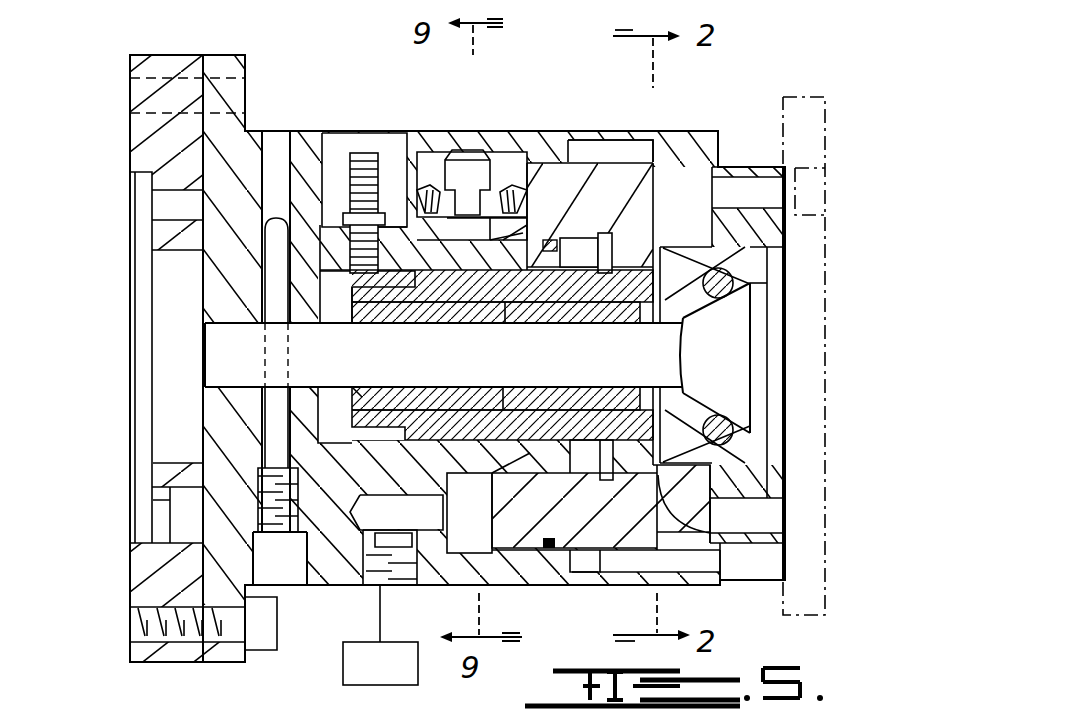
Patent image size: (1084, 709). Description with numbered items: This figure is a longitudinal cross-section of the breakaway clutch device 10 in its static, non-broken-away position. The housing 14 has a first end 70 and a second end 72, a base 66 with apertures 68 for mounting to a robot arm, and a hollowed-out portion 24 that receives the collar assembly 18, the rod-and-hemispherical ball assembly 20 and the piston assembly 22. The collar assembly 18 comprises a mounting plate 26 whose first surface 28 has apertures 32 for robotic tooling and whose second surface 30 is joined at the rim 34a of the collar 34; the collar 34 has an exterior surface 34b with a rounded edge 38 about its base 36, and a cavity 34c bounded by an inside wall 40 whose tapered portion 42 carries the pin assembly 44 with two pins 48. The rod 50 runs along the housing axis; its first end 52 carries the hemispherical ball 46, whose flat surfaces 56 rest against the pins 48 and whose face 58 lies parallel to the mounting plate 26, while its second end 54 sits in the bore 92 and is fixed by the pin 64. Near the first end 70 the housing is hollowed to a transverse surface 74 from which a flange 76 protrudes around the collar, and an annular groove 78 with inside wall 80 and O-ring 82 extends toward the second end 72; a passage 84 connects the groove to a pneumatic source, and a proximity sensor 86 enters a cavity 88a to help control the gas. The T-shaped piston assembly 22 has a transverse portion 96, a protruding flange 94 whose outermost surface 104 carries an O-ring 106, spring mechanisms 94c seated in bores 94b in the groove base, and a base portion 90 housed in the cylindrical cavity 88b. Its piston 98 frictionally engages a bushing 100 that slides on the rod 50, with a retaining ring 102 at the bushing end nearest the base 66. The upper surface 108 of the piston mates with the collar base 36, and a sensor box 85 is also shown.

The clutch device 10 is at (271, 82).
The housing 14 is at (514, 131).
The collar assembly 18 is at (756, 164).
The rod-and-hemispherical ball assembly 20 is at (745, 330).
The piston assembly 22 is at (510, 522).
The hollowed-out portion 24 is at (467, 160).
The mounting plate 26 is at (800, 243).
The first surface 28 is at (833, 100).
The second surface 30 is at (778, 580).
The apertures 32 is at (826, 410).
The collar 34 is at (780, 550).
The rim 34a is at (783, 230).
The exterior surface 34b is at (715, 167).
The cavity 34c is at (758, 258).
The base 36 is at (615, 243).
The rounded edge 38 is at (670, 188).
The inside wall 40 is at (785, 485).
The tapered portion 42 is at (755, 284).
The pin assembly 44 is at (728, 416).
The hemispherical ball 46 is at (740, 364).
The pins 48 is at (750, 331).
The rod 50 is at (382, 359).
The first end 52 is at (673, 345).
The second end 54 is at (203, 336).
The flat surfaces 56 is at (690, 258).
The face 58 is at (750, 347).
The pin 64 is at (265, 423).
The base 66 is at (147, 568).
The apertures 68 is at (130, 85).
The first end 70 is at (725, 580).
The second end 72 is at (130, 125).
The transverse surface 74 is at (597, 232).
The flange 76 is at (617, 582).
The annular groove 78 is at (462, 530).
The inside wall 80 is at (517, 231).
The O-ring 82 is at (552, 246).
The passage 84 is at (360, 556).
The controller 85 is at (343, 663).
The proximity sensor 86 is at (350, 153).
The cavity 88a is at (392, 167).
The cylindrical cavity 88b is at (396, 512).
The base portion 90 is at (448, 422).
The bore 92 is at (205, 393).
The protruding flange 94 is at (594, 170).
The bores 94b is at (450, 197).
The spring mechanism 94c is at (486, 197).
The transverse portion 96 is at (660, 200).
The piston 98 is at (567, 425).
The bushing 100 is at (420, 312).
The retaining ring 102 is at (348, 397).
The outermost surface 104 is at (583, 588).
The O-ring 106 is at (548, 538).
The upper surface 108 is at (668, 540).